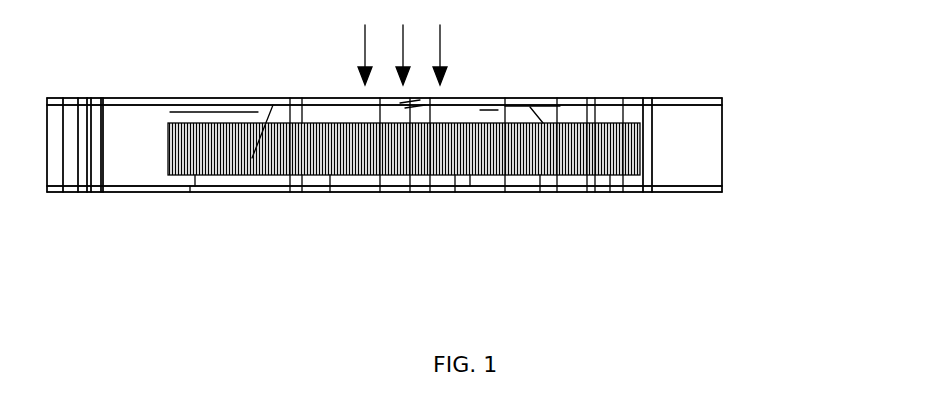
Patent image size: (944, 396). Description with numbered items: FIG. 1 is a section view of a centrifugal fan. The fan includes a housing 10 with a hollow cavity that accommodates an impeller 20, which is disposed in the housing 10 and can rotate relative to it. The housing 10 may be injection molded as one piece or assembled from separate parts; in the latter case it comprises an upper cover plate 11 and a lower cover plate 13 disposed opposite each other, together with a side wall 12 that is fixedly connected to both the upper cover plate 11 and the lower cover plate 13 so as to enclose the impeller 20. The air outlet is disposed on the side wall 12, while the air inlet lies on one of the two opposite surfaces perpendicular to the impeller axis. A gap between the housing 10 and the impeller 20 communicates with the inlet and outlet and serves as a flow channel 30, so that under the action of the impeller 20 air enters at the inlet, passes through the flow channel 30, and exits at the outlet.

The housing 10 is at (813, 237).
The upper cover plate 11 is at (683, 98).
The side wall 12 is at (722, 142).
The lower cover plate 13 is at (713, 193).
The impeller 20 is at (580, 155).
The flow channel 30 is at (140, 153).